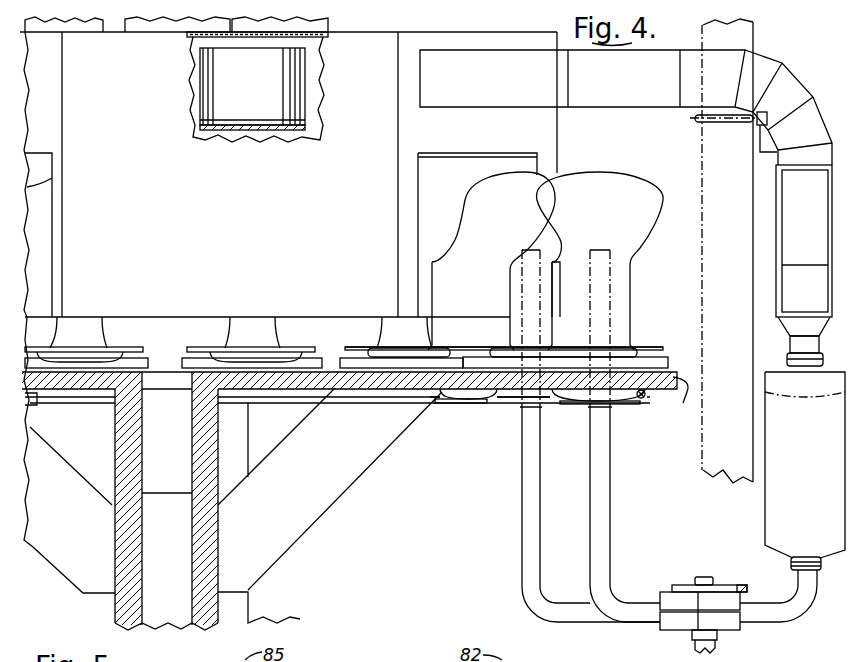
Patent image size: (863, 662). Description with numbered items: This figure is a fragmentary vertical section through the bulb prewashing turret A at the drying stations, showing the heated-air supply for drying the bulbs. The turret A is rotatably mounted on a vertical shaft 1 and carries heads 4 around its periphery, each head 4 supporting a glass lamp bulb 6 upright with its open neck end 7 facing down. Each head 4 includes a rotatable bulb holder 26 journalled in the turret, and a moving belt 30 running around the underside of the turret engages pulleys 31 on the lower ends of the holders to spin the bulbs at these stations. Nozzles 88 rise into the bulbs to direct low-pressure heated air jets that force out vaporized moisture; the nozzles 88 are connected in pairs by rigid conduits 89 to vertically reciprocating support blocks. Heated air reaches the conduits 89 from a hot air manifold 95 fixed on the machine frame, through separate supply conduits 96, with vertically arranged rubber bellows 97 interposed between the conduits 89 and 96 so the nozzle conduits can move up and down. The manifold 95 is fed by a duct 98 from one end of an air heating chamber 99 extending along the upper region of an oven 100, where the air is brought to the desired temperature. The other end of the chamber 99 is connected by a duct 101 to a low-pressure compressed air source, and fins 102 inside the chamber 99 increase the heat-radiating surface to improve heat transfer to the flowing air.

The vertical shaft 1 is at (160, 493).
The head 4 is at (660, 325).
The lamp bulb 6 is at (480, 250).
The open neck end 7 is at (510, 303).
The bulb holder 26 is at (662, 355).
The moving belt 30 is at (477, 399).
The pulley 31 is at (577, 400).
The nozzle 88 is at (522, 408).
The conduit 89 is at (762, 615).
The hot air manifold 95 is at (777, 238).
The supply conduit 96 is at (792, 343).
The rubber bellows 97 is at (765, 505).
The duct 98 is at (632, 98).
The air heating chamber 99 is at (300, 40).
The oven 100 is at (558, 143).
The duct 101 is at (103, 28).
The fins 102 is at (222, 90).
The turret A is at (662, 399).